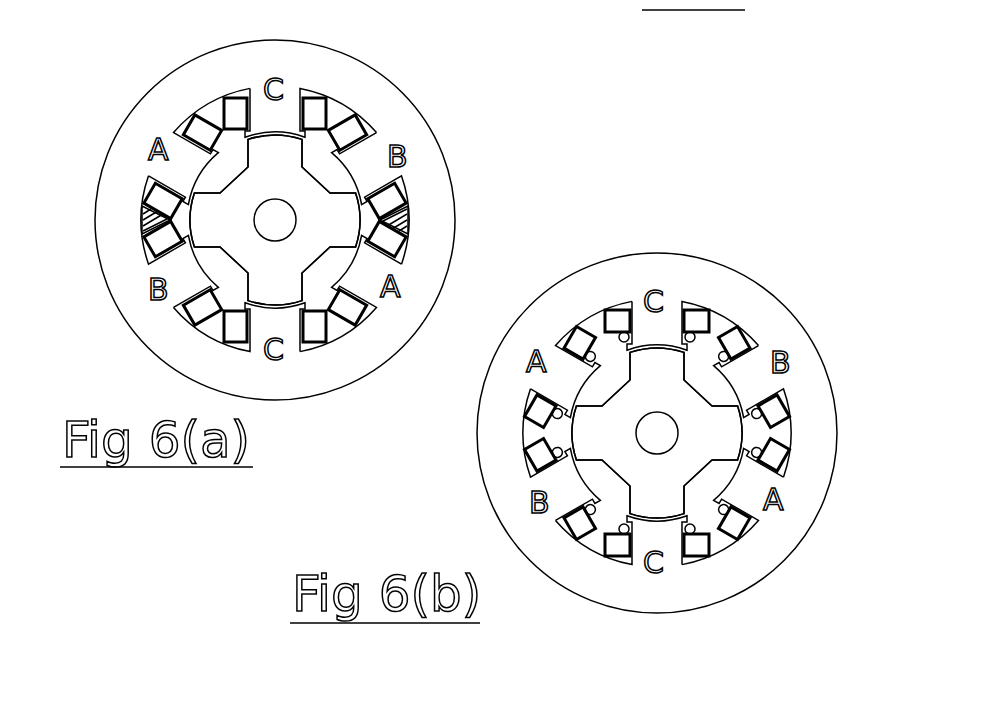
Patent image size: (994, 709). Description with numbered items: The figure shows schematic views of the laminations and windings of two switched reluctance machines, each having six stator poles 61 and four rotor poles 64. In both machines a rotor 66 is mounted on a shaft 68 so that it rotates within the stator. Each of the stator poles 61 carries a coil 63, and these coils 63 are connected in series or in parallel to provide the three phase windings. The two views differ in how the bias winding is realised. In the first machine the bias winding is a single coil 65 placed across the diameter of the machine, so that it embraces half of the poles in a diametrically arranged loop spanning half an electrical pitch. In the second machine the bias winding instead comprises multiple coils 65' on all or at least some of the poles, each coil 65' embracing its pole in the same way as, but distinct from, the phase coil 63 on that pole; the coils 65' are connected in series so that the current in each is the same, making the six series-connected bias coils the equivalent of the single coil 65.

In FIG. 6A, the stator pole 61 is at (288, 110).
In FIG. 6B, the stator pole 61 is at (672, 325).
In FIG. 6A, the coil 63 is at (353, 133).
In FIG. 6B, the coil 63 is at (700, 318).
In FIG. 6A, the rotor pole 64 is at (203, 243).
In FIG. 6B, the rotor pole 64 is at (582, 455).
In FIG. 6A, the coil 65 is at (281, 210).
In FIG. 6B, the coil 65' is at (656, 433).
In FIG. 6A, the rotor 66 is at (250, 235).
In FIG. 6B, the rotor 66 is at (632, 448).
In FIG. 6A, the shaft 68 is at (279, 213).
In FIG. 6B, the shaft 68 is at (661, 426).